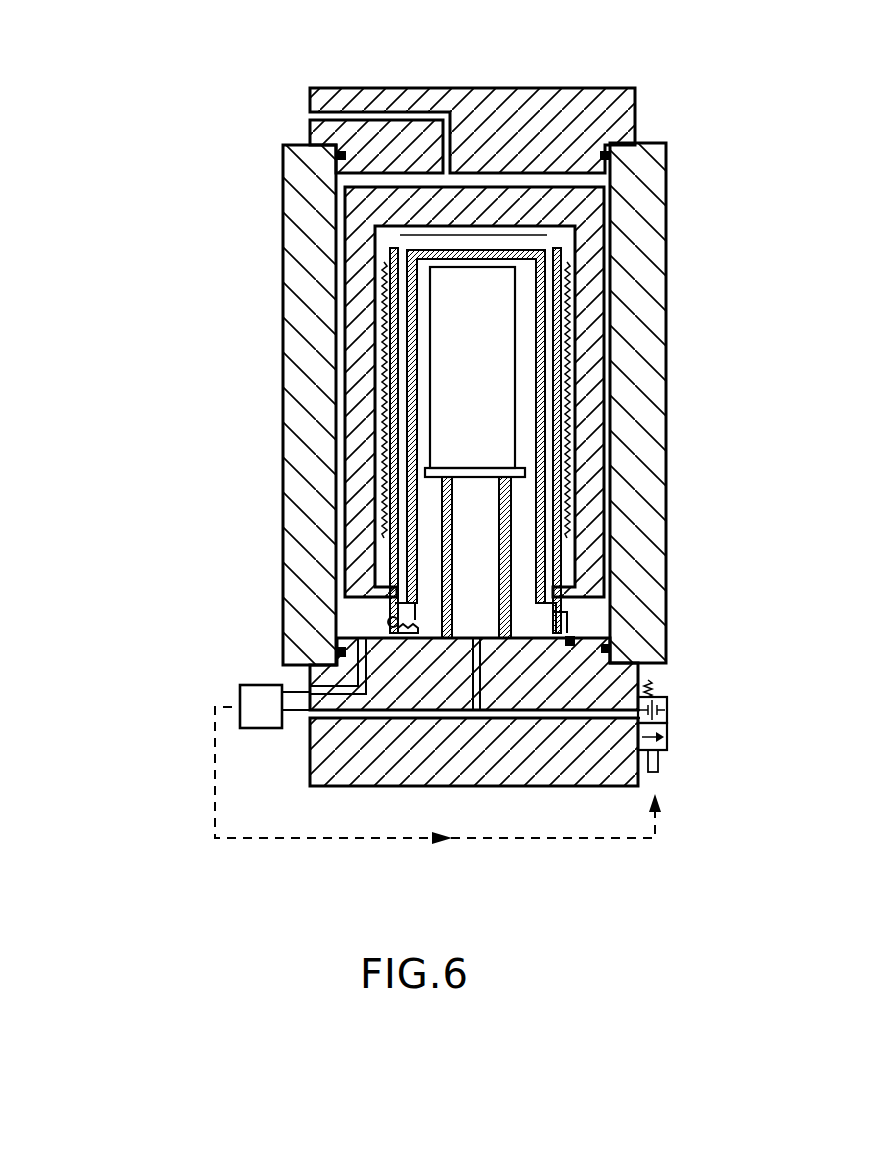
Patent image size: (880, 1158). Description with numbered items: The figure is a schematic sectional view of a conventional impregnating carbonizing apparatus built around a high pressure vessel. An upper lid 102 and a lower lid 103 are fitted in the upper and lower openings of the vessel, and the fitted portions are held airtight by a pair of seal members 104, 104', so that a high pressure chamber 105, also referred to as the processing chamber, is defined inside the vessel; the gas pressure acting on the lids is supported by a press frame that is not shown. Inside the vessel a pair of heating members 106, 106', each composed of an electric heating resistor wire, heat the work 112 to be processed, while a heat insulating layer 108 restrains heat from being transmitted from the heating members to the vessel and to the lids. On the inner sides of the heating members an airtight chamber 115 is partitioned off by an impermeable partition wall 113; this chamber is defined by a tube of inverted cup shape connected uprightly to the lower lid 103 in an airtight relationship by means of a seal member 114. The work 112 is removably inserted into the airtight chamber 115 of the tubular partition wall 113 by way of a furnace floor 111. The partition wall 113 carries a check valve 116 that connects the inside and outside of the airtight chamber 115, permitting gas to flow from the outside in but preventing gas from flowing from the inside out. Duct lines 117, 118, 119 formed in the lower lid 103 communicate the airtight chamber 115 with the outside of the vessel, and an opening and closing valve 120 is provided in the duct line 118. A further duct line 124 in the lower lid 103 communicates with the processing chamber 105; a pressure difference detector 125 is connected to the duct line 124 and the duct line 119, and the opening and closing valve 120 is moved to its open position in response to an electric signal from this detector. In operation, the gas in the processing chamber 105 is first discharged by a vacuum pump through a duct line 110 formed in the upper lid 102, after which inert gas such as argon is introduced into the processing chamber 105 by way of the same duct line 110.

The upper lid 102 is at (500, 88).
The duct line 110 is at (382, 118).
The furnace floor 111 is at (655, 231).
The seal member 104 is at (525, 129).
The high pressure chamber 105 is at (543, 178).
The heat insulating layer 108 is at (600, 300).
The partition wall 113 is at (537, 395).
The heating member 106 is at (562, 440).
The heating member 106' is at (558, 400).
The airtight chamber 115 is at (427, 287).
The work 112 is at (475, 435).
The duct line 117 is at (478, 680).
The check valve 116 is at (388, 619).
The duct line 118 is at (606, 718).
The duct line 119 is at (417, 720).
The lower lid 103 is at (490, 786).
The duct line 124 is at (330, 687).
The pressure difference detector 125 is at (250, 728).
The opening and closing valve 120 is at (667, 746).
The seal member 114 is at (613, 642).
The seal member 104' is at (675, 659).